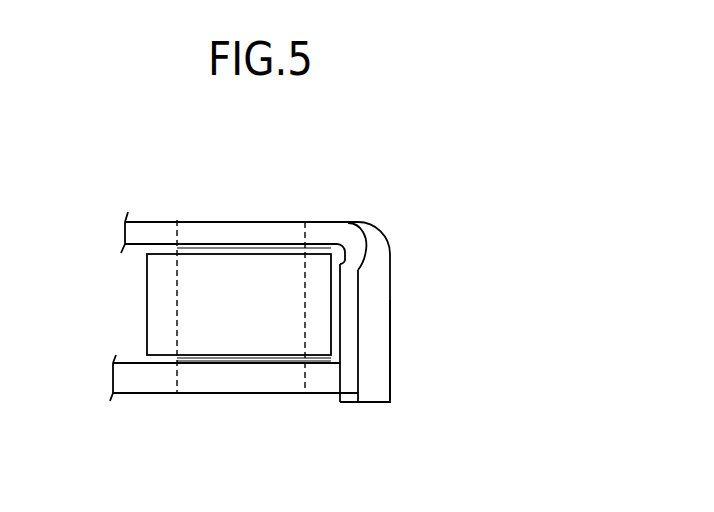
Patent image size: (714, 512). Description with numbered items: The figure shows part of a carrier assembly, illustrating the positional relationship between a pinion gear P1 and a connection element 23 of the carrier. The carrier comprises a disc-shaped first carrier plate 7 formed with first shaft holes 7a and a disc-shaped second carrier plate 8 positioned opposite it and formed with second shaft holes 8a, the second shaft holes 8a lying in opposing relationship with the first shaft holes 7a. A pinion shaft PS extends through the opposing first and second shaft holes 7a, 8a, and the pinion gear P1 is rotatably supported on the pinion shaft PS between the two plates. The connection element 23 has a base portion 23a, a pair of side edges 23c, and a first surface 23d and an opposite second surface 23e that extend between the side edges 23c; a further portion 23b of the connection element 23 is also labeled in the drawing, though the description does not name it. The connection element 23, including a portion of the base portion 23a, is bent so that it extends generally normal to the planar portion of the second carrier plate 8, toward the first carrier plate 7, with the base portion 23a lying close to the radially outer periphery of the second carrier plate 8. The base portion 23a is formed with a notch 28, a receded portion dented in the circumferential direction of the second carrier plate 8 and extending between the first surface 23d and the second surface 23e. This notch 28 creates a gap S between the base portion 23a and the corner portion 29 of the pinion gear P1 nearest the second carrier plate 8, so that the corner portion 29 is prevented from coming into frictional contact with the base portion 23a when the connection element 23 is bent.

The first carrier plate 7 is at (197, 380).
The first shaft hole 7a is at (303, 378).
The second carrier plate 8 is at (217, 232).
The second shaft hole 8a is at (177, 235).
The pinion gear P1 is at (160, 320).
The pinion shaft PS is at (176, 282).
The connection element 23 is at (387, 326).
The base portion 23a is at (350, 240).
The lower step portion 23b is at (348, 383).
The side edge 23c is at (352, 380).
The first surface 23d is at (377, 365).
The second surface 23e is at (337, 327).
The notch 28 is at (340, 266).
The corner portion 29 is at (317, 258).
The gap S is at (338, 243).